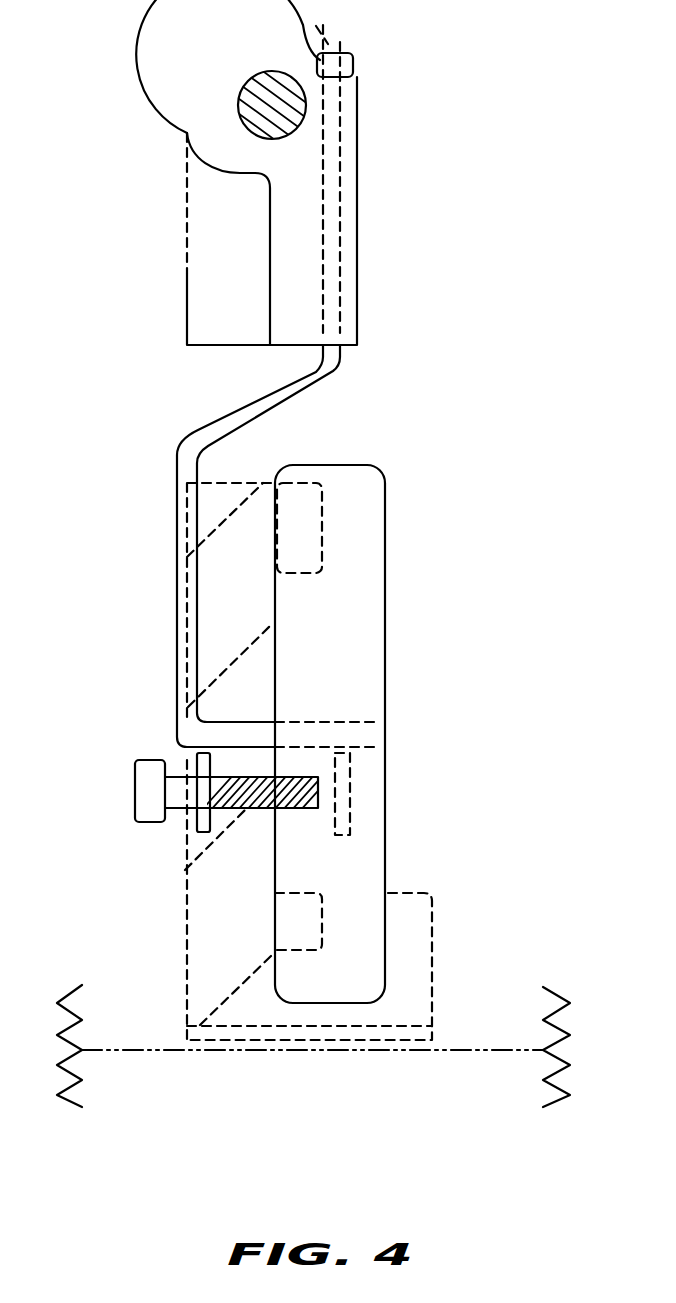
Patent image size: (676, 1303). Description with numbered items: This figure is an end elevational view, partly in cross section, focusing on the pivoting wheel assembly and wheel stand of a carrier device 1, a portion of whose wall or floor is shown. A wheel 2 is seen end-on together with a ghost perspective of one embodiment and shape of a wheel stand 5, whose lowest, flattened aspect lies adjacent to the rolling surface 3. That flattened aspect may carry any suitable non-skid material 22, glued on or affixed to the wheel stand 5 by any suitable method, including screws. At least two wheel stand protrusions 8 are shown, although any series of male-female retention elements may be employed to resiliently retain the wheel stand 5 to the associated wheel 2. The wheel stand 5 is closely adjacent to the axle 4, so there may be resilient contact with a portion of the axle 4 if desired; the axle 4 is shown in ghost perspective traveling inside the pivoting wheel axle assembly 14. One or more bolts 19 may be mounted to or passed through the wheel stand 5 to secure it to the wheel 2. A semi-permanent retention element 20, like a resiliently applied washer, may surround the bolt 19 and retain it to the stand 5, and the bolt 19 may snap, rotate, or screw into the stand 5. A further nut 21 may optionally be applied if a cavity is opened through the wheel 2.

The carrier device 1 is at (200, 212).
The pivoting wheel axle assembly 14 is at (357, 183).
The wheel stand protrusion 8 is at (293, 500).
The axle 4 is at (177, 655).
The semi-permanent retention element 20 is at (190, 762).
The bolt 19 is at (135, 810).
The nut 21 is at (352, 762).
The wheel 2 is at (385, 828).
The wheel stand 5 is at (197, 982).
The rolling surface 3 is at (490, 1048).
The non-skid material 22 is at (410, 1035).